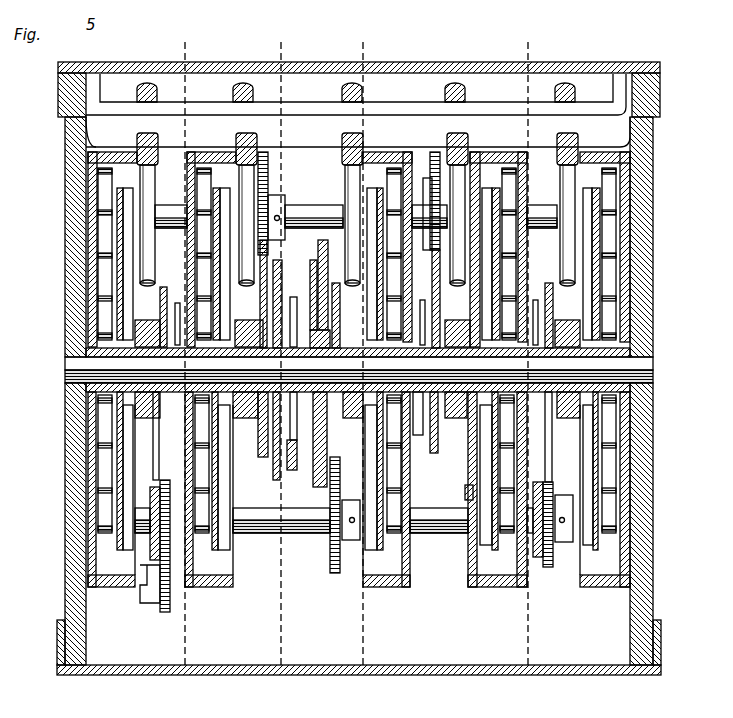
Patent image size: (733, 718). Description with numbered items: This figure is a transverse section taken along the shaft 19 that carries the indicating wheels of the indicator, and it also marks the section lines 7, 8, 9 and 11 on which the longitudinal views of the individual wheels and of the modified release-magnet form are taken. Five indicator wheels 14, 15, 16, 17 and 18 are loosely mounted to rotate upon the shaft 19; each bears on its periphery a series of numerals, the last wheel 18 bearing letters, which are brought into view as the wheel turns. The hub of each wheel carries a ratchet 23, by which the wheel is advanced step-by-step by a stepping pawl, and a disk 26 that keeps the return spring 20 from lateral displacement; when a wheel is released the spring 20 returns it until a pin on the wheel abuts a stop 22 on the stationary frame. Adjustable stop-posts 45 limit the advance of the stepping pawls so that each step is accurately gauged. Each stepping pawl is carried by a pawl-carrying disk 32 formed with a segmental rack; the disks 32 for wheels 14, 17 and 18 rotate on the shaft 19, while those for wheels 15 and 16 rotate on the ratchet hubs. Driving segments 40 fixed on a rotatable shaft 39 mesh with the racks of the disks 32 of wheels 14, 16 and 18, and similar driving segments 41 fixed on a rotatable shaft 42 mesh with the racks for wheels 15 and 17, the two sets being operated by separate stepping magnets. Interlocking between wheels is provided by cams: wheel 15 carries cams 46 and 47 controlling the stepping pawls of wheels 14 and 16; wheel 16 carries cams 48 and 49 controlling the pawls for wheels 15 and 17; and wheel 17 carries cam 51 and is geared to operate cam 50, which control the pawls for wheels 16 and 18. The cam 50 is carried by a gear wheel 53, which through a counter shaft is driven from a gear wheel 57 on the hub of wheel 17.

The section line 7— 7 is at (200, 37).
The section line 8— 8 is at (300, 37).
The section line 9— 9 is at (382, 37).
The section line 11— 11 is at (536, 40).
The indicator wheel 14 is at (112, 368).
The indicator wheel 15 is at (200, 368).
The indicator wheel 16 is at (378, 150).
The indicator wheel 17 is at (500, 368).
The indicator wheel 18 is at (632, 158).
The shaft 19 is at (337, 370).
The spring 20 is at (606, 533).
The stop 22 is at (370, 111).
The ratchet 23 is at (357, 369).
The disk 26 is at (124, 458).
The pawl-carrying disk 32 is at (356, 365).
The rotatable shaft 39 is at (250, 533).
The driving segment 40 is at (160, 483).
The driving segment 41 is at (268, 160).
The rotatable shaft 42 is at (308, 210).
The adjustable stop-post 45 is at (372, 204).
The cam 46 is at (177, 303).
The cam 47 is at (282, 360).
The cam 48 is at (292, 297).
The cam 49 is at (422, 300).
The cam 50 is at (301, 292).
The cam 51 is at (537, 300).
The gear wheel 53 is at (308, 369).
The gear wheel 57 is at (465, 495).